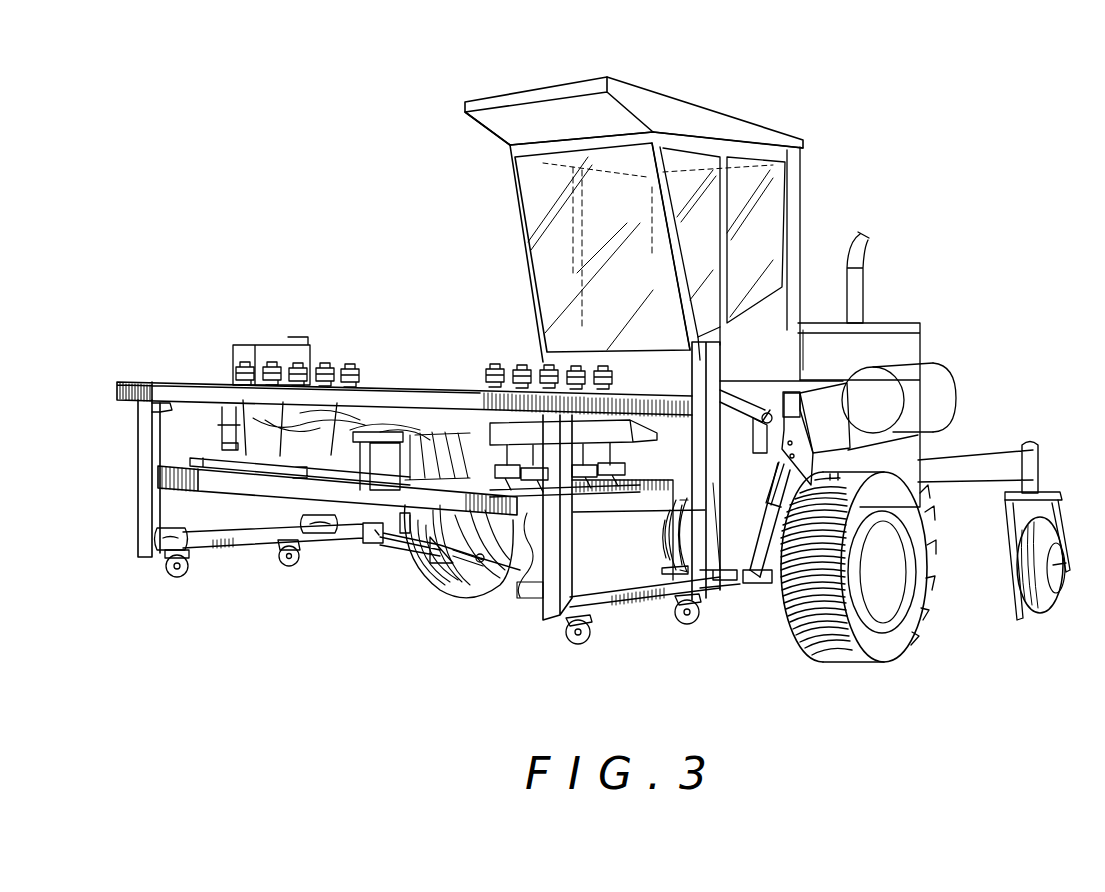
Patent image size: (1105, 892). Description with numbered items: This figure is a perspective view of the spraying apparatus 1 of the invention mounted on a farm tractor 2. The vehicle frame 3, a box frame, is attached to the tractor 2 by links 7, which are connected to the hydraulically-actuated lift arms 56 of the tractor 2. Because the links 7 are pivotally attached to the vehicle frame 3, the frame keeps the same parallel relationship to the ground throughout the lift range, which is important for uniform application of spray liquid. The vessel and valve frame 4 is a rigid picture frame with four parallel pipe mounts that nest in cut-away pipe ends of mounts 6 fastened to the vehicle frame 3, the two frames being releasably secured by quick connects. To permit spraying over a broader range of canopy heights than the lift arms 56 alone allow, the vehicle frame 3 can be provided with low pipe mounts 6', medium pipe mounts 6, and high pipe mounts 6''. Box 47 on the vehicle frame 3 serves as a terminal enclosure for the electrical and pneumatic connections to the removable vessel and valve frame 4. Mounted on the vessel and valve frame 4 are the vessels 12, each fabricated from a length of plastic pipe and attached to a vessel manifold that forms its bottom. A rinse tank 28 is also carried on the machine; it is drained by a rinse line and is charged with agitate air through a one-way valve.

The spraying apparatus 1 is at (450, 270).
The farm tractor 2 is at (803, 193).
The vehicle frame 3 is at (138, 383).
The vessel and valve frame 4 is at (245, 487).
The pipe mounts 6 is at (145, 569).
The low set of pipe mounts 6' is at (620, 580).
The high set of pipe mounts 6'' is at (190, 484).
The links 7 is at (743, 422).
The vessels 12 is at (237, 370).
The rinse tank 28 is at (935, 387).
The box 47 is at (242, 345).
The hydraulically-actuated lift arms 56 is at (762, 532).